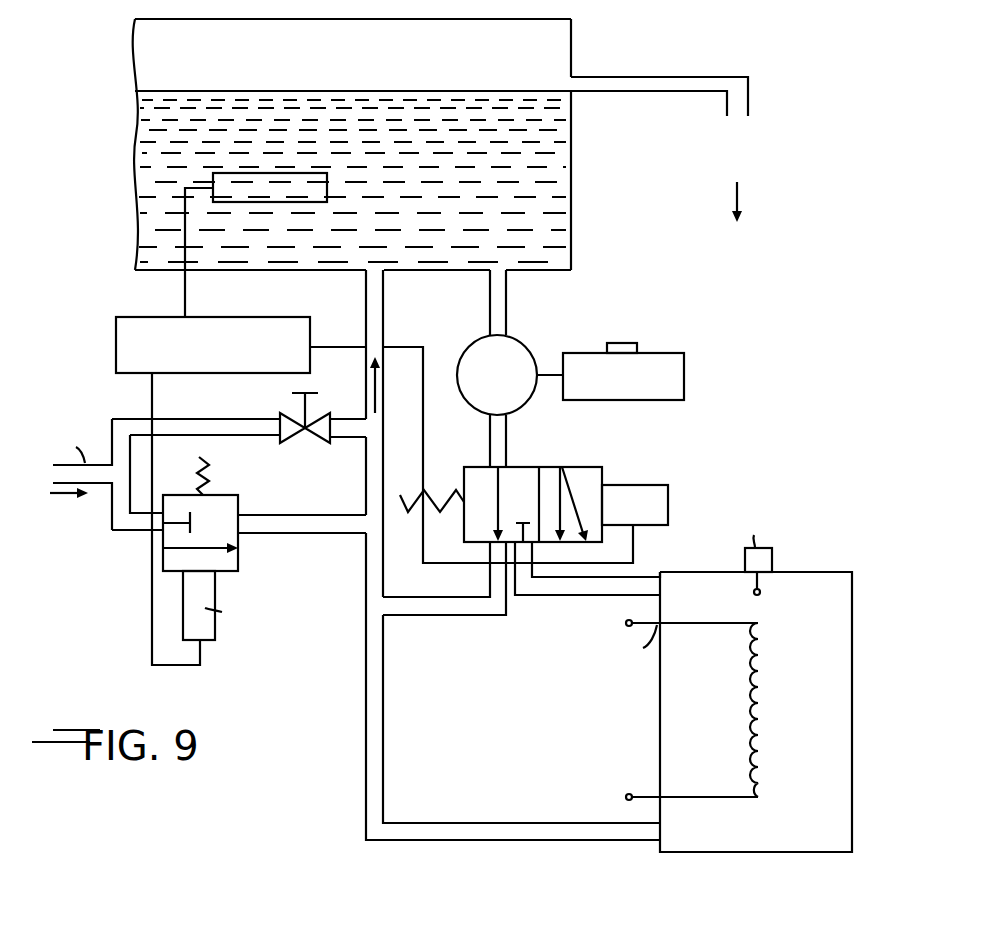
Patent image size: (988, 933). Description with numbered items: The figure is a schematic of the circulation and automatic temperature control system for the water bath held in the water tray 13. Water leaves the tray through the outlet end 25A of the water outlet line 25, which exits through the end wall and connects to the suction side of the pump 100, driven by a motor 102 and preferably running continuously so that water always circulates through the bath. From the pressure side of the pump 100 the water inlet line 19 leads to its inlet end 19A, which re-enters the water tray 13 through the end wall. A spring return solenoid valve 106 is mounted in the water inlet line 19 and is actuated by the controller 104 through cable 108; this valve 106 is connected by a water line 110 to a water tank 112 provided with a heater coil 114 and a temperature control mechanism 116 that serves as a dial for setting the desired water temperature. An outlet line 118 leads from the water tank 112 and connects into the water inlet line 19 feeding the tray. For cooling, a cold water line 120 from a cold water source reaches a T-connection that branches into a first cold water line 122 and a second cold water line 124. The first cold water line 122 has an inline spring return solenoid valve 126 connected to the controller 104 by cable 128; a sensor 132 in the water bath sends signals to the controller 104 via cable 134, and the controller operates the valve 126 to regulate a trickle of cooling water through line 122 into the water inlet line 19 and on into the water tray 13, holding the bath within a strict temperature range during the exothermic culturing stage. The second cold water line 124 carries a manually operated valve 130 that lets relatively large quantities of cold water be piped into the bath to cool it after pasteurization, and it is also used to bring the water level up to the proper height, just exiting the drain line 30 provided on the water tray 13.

The water tray 13 is at (578, 228).
The water inlet line 19 is at (383, 537).
The inlet end 19A is at (385, 312).
The water outlet line 25 is at (508, 318).
The outlet end 25A is at (506, 290).
The drain line 30 is at (749, 92).
The pump 100 is at (530, 400).
The motor 102 is at (687, 372).
The controller 104 is at (135, 317).
The spring return solenoid valve 106 is at (596, 467).
The cable 108 is at (633, 547).
The water line 110 is at (572, 597).
The water tank 112 is at (660, 713).
The heater coil 114 is at (650, 798).
The temperature control mechanism 116 is at (775, 562).
The outlet line 118 is at (513, 843).
The cold water line 120 is at (98, 462).
The first cold water line 122 is at (128, 536).
The second cold water line 124 is at (237, 437).
The spring return solenoid valve 126 is at (238, 558).
The cable 128 is at (148, 650).
The manually operated valve 130 is at (283, 414).
The sensor 132 is at (243, 173).
The cable 134 is at (185, 208).